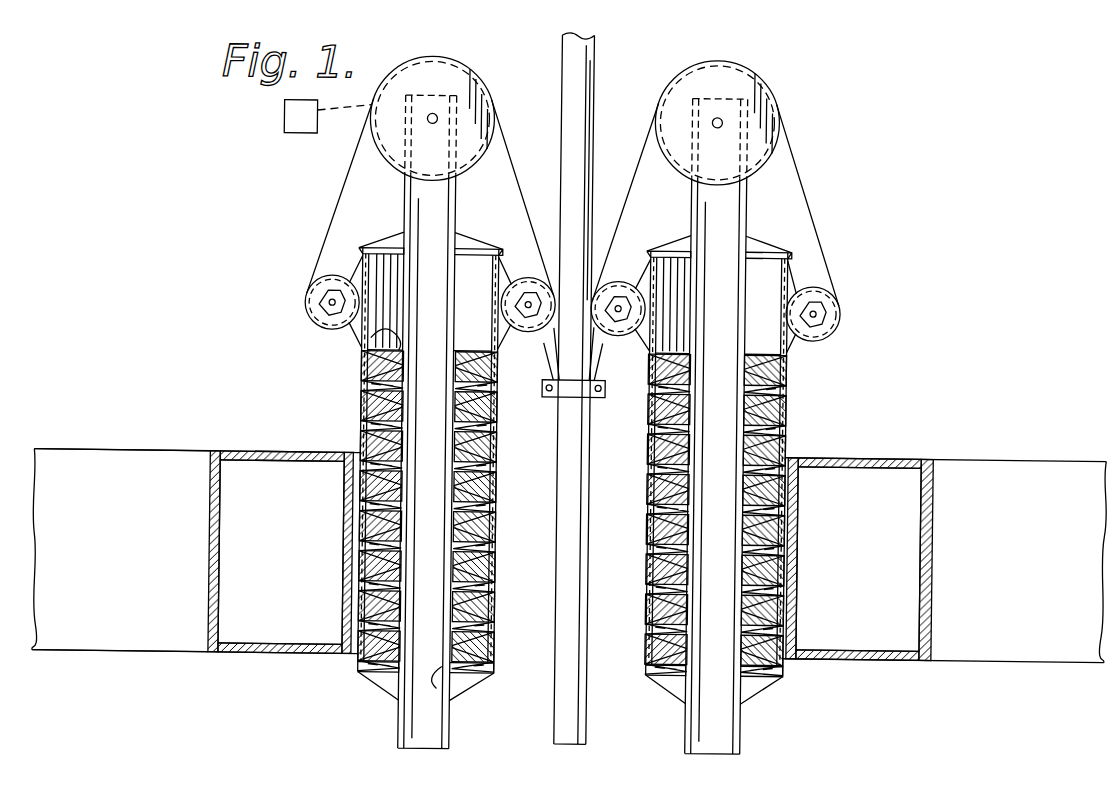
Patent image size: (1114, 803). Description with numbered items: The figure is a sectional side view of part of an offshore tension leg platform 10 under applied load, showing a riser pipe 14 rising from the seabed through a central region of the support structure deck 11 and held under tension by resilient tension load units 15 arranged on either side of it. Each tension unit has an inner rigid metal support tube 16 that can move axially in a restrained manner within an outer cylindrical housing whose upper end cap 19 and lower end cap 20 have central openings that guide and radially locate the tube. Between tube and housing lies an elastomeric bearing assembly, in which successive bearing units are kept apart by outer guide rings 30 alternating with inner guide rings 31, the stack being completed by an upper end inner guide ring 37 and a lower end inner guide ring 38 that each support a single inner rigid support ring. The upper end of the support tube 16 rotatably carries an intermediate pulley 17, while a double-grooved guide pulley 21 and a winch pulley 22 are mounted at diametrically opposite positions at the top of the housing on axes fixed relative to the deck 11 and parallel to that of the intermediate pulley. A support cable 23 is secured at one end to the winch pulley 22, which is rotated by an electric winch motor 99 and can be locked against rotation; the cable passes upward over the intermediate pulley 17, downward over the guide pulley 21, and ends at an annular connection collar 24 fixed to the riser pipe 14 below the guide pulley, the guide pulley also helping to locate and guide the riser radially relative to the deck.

The offshore tension leg platform 10 is at (150, 430).
The support structure deck 11 is at (75, 622).
The riser pipe 14 is at (569, 746).
The resilient tension load unit 15 is at (348, 389).
The support tube 16 is at (400, 740).
The intermediate pulley 17 is at (474, 93).
The upper end cap 19 is at (383, 248).
The lower end cap 20 is at (366, 680).
The guide pulley 21 is at (529, 280).
The winch pulley 22 is at (304, 310).
The support cable 23 is at (341, 188).
The connection collar 24 is at (597, 400).
The outer guide ring 30 is at (405, 452).
The inner guide ring 31 is at (358, 453).
The upper end inner guide ring 37 is at (372, 340).
The lower end inner guide ring 38 is at (440, 690).
The electric winch motor 99 is at (283, 121).